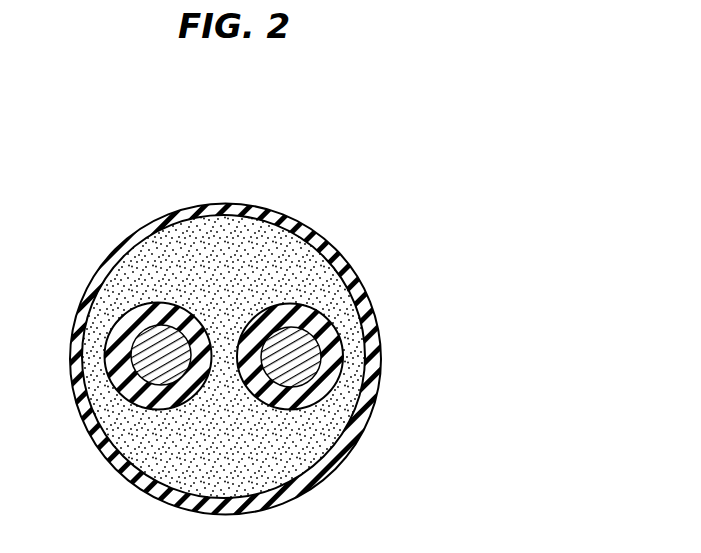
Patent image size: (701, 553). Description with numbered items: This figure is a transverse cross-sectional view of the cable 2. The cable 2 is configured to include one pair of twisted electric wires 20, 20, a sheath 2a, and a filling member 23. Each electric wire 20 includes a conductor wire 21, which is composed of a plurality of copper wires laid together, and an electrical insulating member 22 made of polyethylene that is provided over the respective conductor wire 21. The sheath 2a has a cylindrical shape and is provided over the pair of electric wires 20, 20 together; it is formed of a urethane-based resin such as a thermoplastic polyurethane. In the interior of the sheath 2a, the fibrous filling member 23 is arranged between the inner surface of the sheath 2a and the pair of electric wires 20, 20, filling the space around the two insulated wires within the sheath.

The cable 2 is at (366, 202).
The sheath 2a is at (352, 278).
The electric wire 20 is at (125, 157).
The conductor wire 21 is at (155, 340).
The electrical insulating member 22 is at (187, 323).
The filling member 23 is at (95, 380).